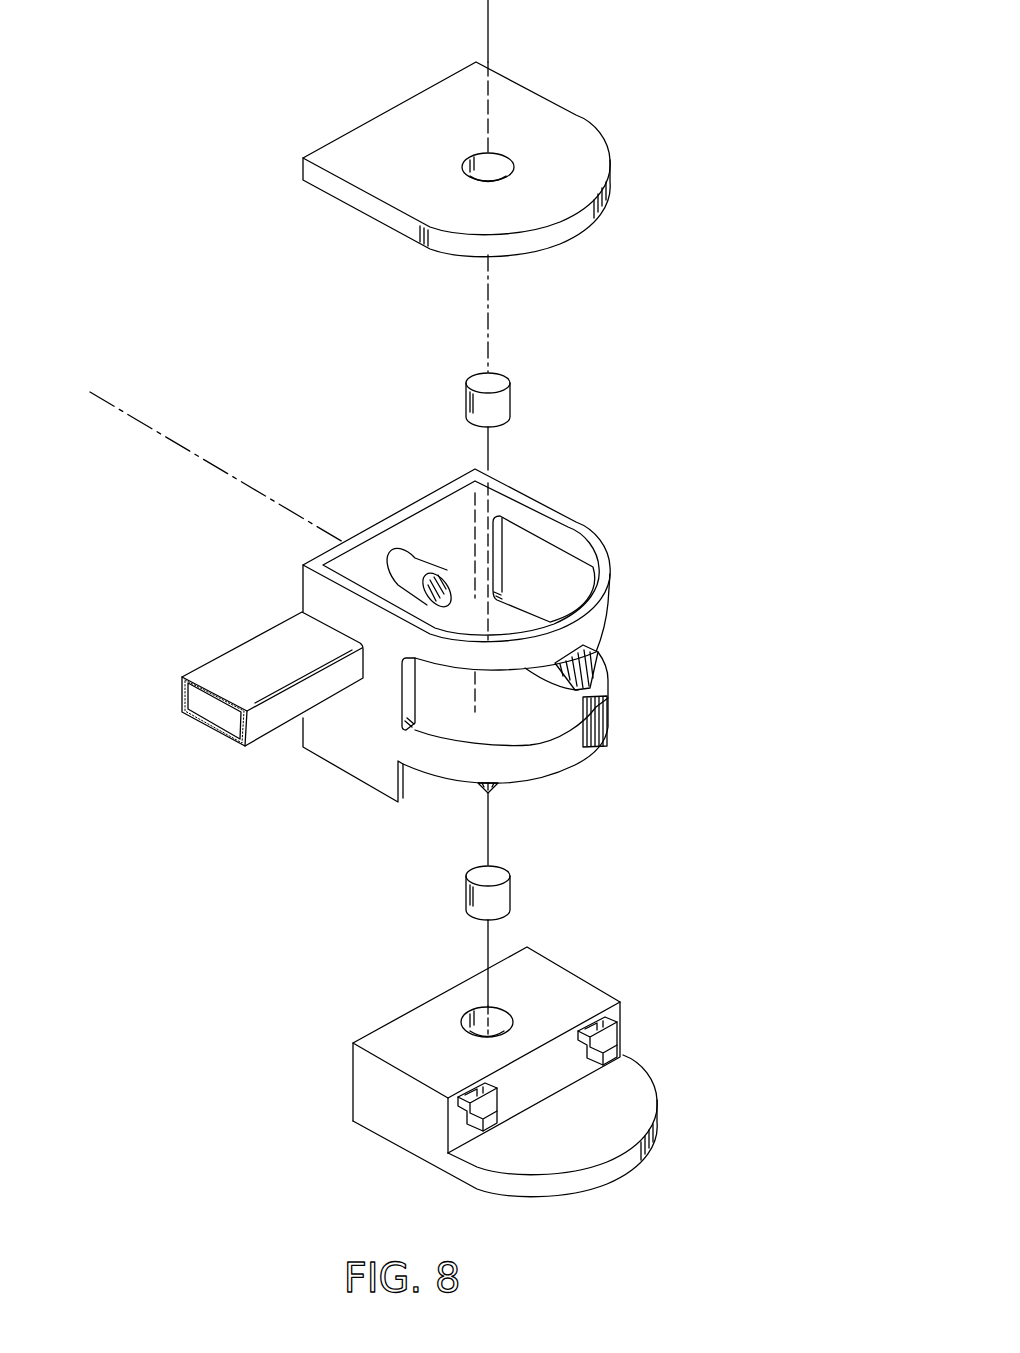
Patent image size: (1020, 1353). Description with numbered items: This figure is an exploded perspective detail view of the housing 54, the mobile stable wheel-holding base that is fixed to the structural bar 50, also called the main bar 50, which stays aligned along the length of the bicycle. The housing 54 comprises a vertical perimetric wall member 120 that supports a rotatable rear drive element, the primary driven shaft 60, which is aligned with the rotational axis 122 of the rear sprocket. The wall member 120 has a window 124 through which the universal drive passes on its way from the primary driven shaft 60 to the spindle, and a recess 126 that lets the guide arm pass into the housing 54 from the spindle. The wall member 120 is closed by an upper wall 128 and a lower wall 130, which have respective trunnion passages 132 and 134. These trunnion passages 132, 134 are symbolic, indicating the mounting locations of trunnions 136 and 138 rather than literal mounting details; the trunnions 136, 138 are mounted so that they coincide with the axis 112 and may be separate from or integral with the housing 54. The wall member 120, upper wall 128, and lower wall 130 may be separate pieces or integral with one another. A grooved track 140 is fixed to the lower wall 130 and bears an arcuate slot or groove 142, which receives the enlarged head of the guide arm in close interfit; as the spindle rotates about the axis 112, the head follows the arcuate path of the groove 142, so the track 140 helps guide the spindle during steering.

The structural bar 50 is at (232, 672).
The housing 54 is at (662, 522).
The primary driven shaft 60 is at (437, 567).
The axis 112 is at (486, 948).
The vertical perimetric wall member 120 is at (305, 762).
The rotational axis 122 is at (158, 440).
The window 124 is at (600, 650).
The recess 126 is at (588, 773).
The upper wall 128 is at (456, 159).
The lower wall 130 is at (700, 1178).
The trunnion passage 132 is at (503, 152).
The trunnion passage 134 is at (465, 1018).
The trunnion 136 is at (512, 397).
The trunnion 138 is at (510, 899).
The grooved track 140 is at (578, 966).
The arcuate slot or groove 142 is at (620, 1034).